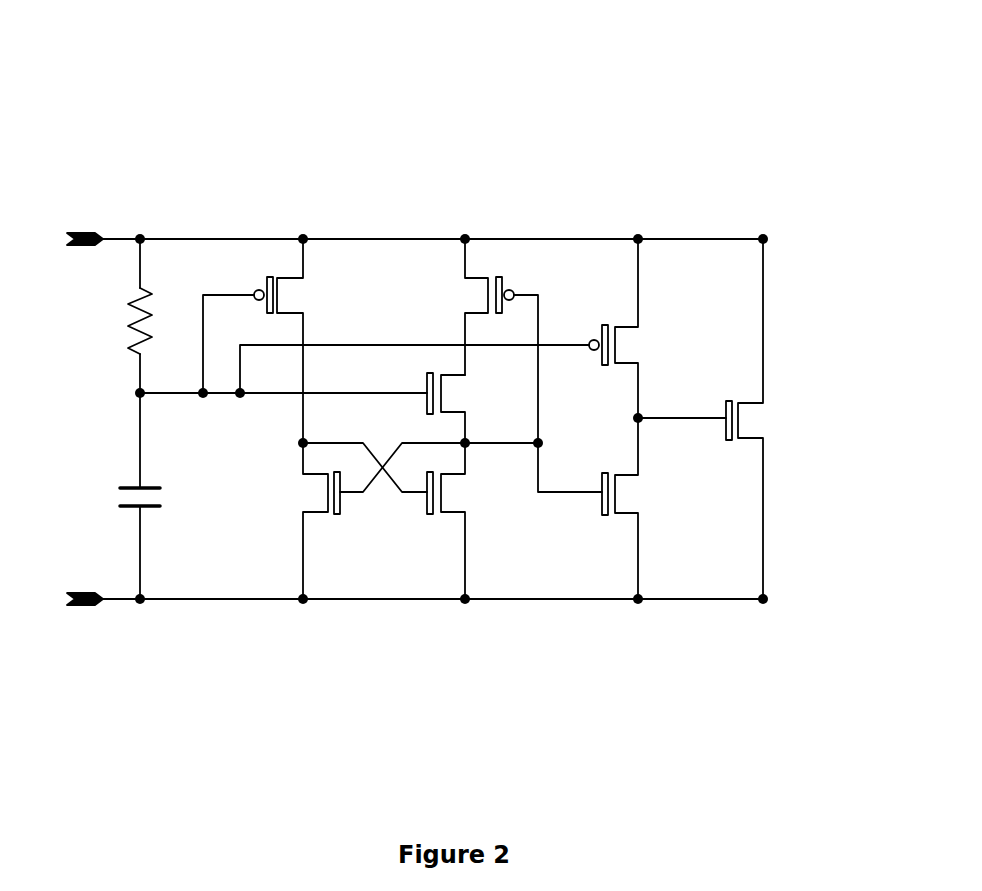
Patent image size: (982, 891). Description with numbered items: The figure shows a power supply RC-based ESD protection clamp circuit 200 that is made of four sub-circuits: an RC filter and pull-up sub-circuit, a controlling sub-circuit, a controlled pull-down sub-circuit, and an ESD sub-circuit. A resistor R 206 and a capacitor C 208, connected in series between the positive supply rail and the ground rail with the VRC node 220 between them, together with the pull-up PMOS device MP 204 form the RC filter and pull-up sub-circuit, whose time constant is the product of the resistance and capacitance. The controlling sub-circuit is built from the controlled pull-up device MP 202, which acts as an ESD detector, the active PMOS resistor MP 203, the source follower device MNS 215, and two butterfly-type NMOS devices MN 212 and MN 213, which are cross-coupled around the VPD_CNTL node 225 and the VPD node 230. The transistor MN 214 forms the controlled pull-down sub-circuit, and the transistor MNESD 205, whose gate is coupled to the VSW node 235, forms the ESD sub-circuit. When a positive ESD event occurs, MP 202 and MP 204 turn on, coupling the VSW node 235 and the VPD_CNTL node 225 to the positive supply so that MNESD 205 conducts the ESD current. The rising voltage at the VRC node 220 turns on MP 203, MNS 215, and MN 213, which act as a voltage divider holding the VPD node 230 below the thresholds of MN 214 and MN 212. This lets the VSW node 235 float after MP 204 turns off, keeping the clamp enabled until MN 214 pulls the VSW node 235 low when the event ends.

The power supply RC-based ESD protection clamp circuit 200 is at (542, 112).
The controlled pull-up device MP 202 is at (284, 341).
The active PMOS resistor MP 203 is at (471, 341).
The pull-up PMOS device MP 204 is at (471, 328).
The ESD transistor MNESD 205 is at (776, 419).
The resistor R 206 is at (117, 321).
The capacitor C 208 is at (118, 495).
The butterfly-type NMOS device MN 212 is at (291, 521).
The butterfly-type NMOS device MN 213 is at (480, 521).
The controlled pull-down transistor MN 214 is at (653, 508).
The source follower device MNS 215 is at (469, 408).
The VRC node 220 is at (255, 400).
The VPD_CNTL node 225 is at (300, 443).
The VPD node 230 is at (471, 455).
The VSW node 235 is at (679, 421).